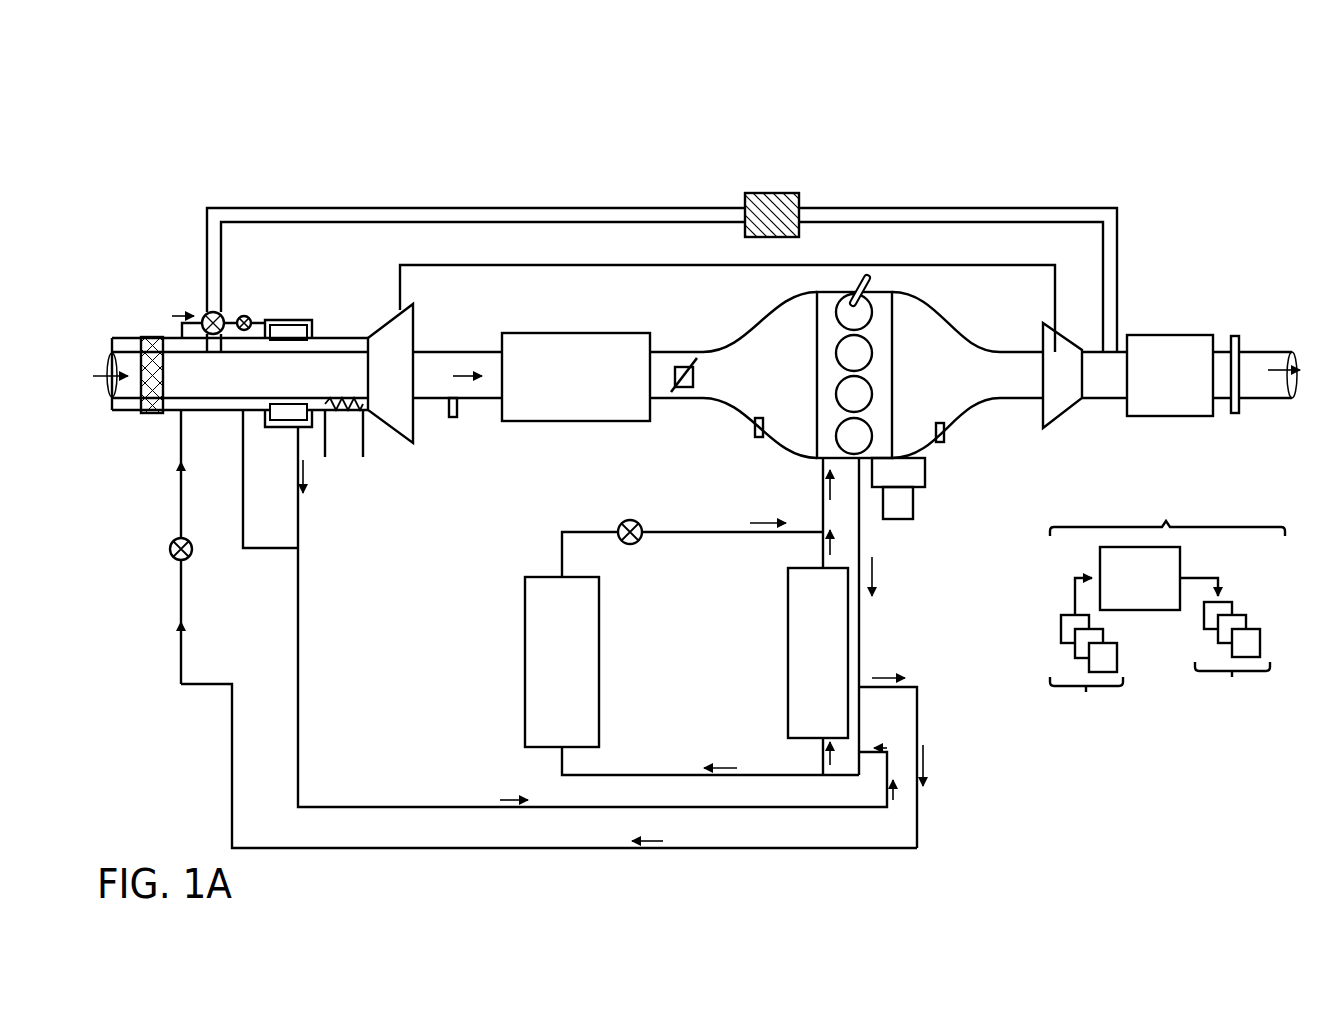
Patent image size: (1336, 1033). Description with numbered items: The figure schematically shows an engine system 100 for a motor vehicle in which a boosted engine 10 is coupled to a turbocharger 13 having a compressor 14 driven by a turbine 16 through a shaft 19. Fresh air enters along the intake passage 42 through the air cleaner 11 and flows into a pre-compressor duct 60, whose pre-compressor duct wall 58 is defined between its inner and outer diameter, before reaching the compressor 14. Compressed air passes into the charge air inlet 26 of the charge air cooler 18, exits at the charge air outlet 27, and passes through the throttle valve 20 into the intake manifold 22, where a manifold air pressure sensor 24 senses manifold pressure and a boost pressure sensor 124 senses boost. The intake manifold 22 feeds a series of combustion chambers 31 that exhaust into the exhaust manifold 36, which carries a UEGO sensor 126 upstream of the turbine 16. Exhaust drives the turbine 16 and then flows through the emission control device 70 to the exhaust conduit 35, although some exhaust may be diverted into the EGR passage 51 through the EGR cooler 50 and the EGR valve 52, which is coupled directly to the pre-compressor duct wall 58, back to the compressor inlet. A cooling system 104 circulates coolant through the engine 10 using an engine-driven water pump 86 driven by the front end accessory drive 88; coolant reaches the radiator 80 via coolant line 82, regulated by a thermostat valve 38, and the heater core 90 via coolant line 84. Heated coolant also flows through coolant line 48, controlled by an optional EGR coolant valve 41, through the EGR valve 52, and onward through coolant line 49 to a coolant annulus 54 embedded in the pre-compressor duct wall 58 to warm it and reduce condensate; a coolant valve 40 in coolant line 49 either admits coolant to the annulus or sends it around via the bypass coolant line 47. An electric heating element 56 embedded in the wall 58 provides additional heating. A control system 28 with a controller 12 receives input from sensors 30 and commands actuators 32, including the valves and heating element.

The engine system 100 is at (1205, 163).
The engine 10 is at (893, 362).
The air cleaner 11 is at (163, 357).
The controller 12 is at (1152, 593).
The turbocharger 13 is at (616, 259).
The compressor 14 is at (404, 389).
The turbine 16 is at (1075, 389).
The charge air cooler 18 is at (587, 389).
The shaft 19 is at (977, 265).
The throttle valve 20 is at (698, 379).
The intake manifold 22 is at (790, 389).
The manifold air pressure sensor 24 is at (755, 418).
The charge air inlet 26 is at (500, 373).
The charge air outlet 27 is at (660, 372).
The control system 28 is at (1167, 506).
The sensors 30 is at (1091, 676).
The combustion chambers 31 is at (868, 305).
The actuators 32 is at (1235, 660).
The exhaust conduit 35 is at (1277, 352).
The exhaust manifold 36 is at (957, 389).
The thermostat valve 38 is at (626, 545).
The coolant valve 40 is at (251, 320).
The EGR coolant valve 41 is at (169, 549).
The intake passage 42 is at (137, 398).
The bypass coolant line 47 is at (245, 488).
The coolant line 48 is at (232, 768).
The coolant line 49 is at (226, 317).
The EGR cooler 50 is at (778, 193).
The EGR passage 51 is at (887, 208).
The EGR valve 52 is at (207, 312).
The coolant annulus 54 is at (292, 332).
The electric heating element 56 is at (363, 447).
The pre-compressor duct wall 58 is at (330, 345).
The pre-compressor duct 60 is at (346, 276).
The emission control device 70 is at (1160, 335).
The radiator 80 is at (562, 662).
The coolant line 82 is at (737, 532).
The coolant line 84 is at (822, 561).
The engine-driven water pump 86 is at (915, 510).
The front end accessory drive 88 is at (926, 470).
The heater core 90 is at (818, 653).
The cooling system 104 is at (938, 644).
The boost pressure sensor 124 is at (457, 413).
The UEGO sensor 126 is at (945, 428).